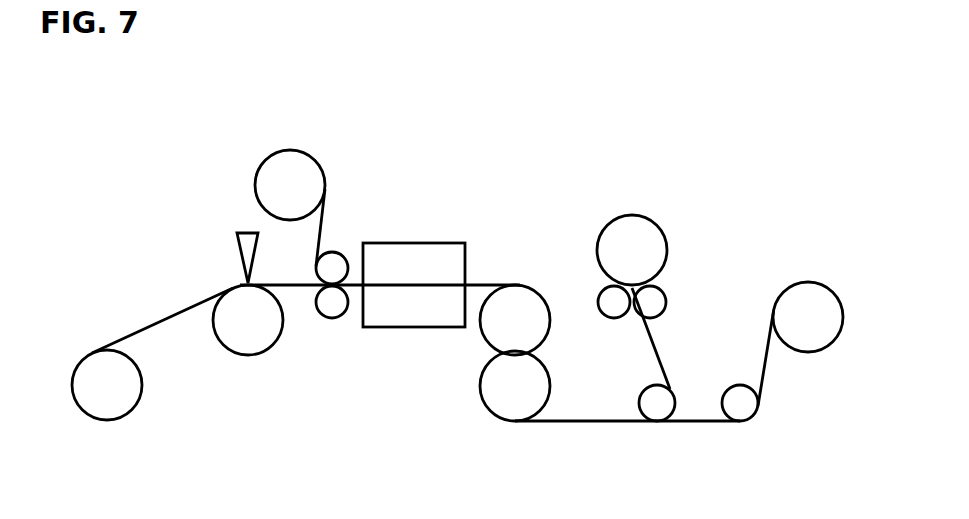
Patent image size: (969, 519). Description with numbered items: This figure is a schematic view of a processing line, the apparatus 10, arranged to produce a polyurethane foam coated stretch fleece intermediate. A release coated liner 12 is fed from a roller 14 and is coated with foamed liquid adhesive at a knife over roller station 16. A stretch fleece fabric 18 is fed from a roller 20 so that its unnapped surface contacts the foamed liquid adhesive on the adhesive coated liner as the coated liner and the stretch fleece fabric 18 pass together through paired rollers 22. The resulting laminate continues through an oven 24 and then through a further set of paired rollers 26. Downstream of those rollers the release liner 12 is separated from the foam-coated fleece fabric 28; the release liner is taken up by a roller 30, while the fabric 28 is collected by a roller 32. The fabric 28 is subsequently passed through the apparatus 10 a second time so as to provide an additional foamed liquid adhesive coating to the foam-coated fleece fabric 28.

The apparatus 10 is at (198, 132).
The release coated liner 12 is at (165, 319).
The roller 14 is at (105, 420).
The knife over roller station 16 is at (237, 233).
The stretch fleece fabric 18 is at (322, 223).
The roller 20 is at (310, 152).
The paired rollers 22 is at (332, 318).
The oven 24 is at (415, 242).
The paired rollers 26 is at (482, 383).
The foam-coated fleece fabric 28 is at (655, 360).
The roller 30 is at (808, 284).
The roller 32 is at (630, 217).